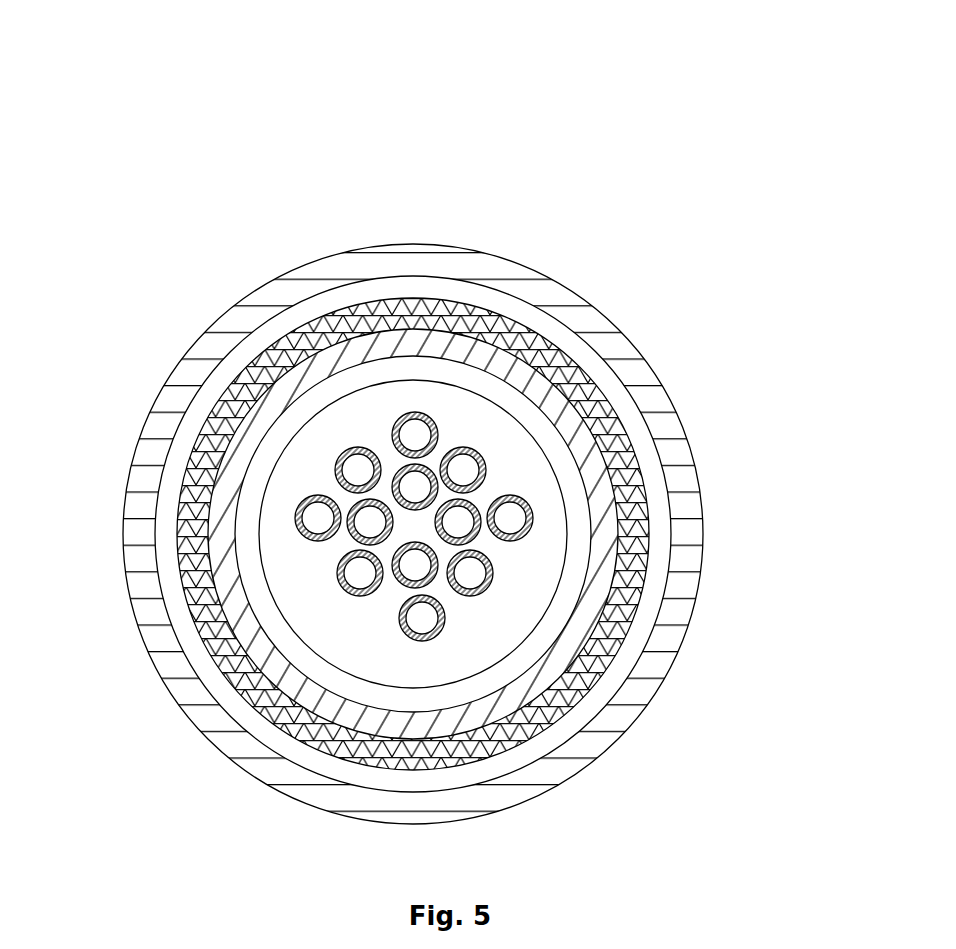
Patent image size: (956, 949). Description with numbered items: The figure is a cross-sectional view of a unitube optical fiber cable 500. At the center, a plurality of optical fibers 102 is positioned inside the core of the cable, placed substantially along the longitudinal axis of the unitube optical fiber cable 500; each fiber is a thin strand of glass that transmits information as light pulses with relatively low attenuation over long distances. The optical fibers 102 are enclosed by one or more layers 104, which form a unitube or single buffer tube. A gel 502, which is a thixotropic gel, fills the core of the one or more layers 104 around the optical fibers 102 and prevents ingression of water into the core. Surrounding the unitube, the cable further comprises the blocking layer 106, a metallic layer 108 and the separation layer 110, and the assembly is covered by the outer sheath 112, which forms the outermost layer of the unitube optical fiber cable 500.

The unitube optical fiber cable 500 is at (208, 97).
The plurality of optical fibers 102 is at (415, 435).
The one or more layers 104 is at (560, 470).
The blocking layer 106 is at (600, 557).
The metallic layer 108 is at (615, 637).
The separation layer 110 is at (202, 707).
The outer sheath 112 is at (138, 532).
The gel 502 is at (283, 515).